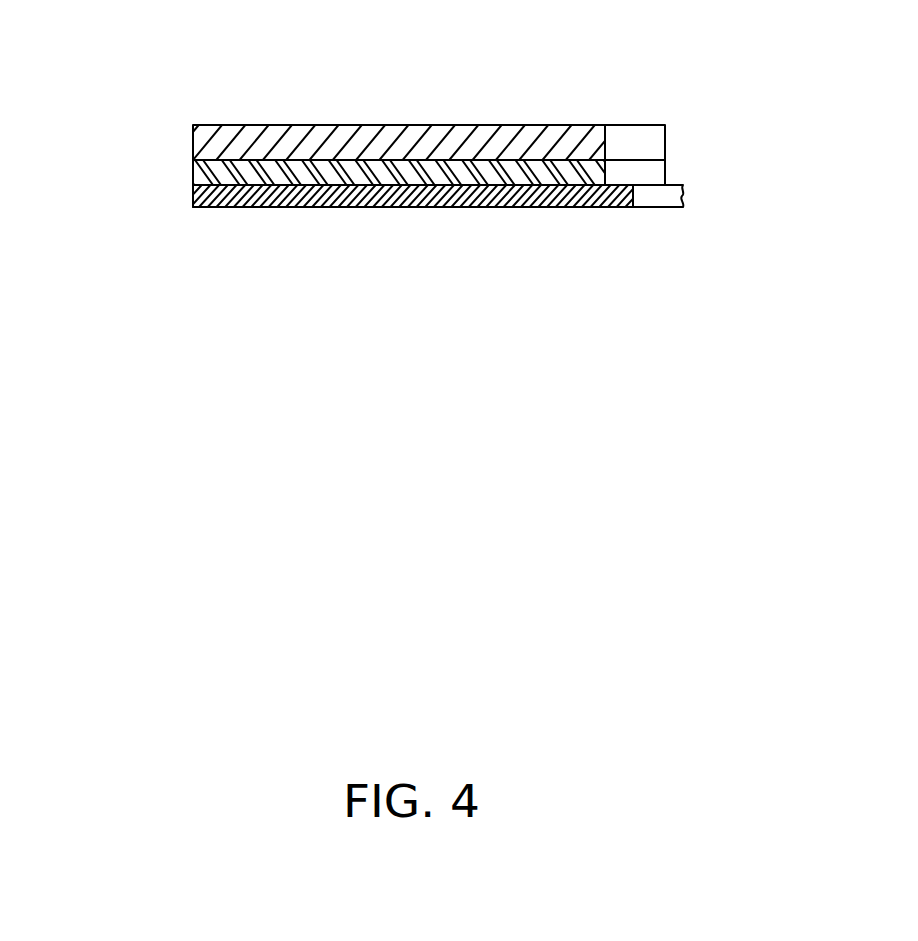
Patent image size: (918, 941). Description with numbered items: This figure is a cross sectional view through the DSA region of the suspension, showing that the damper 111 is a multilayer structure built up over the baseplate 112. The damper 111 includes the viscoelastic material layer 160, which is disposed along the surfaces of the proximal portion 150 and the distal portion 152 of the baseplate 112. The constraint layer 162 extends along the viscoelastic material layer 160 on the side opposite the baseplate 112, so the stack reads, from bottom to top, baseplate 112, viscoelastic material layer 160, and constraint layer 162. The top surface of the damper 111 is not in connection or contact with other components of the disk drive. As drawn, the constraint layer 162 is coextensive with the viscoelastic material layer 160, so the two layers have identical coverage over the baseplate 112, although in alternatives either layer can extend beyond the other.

The damper 111 is at (280, 108).
The baseplate 112 is at (212, 207).
The proximal portion 150 is at (653, 207).
The distal portion 152 is at (193, 187).
The viscoelastic material layer 160 is at (653, 173).
The constraint layer 162 is at (577, 131).